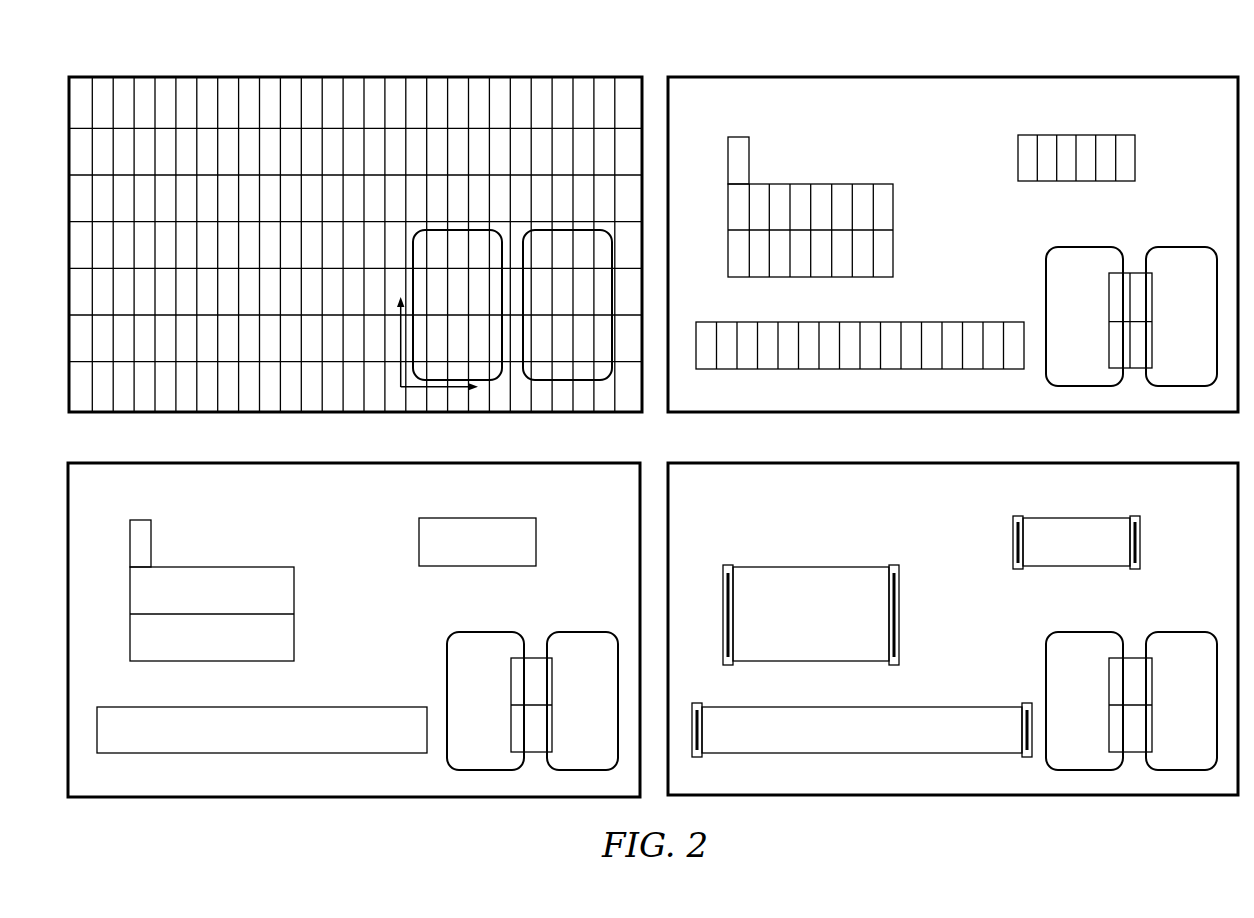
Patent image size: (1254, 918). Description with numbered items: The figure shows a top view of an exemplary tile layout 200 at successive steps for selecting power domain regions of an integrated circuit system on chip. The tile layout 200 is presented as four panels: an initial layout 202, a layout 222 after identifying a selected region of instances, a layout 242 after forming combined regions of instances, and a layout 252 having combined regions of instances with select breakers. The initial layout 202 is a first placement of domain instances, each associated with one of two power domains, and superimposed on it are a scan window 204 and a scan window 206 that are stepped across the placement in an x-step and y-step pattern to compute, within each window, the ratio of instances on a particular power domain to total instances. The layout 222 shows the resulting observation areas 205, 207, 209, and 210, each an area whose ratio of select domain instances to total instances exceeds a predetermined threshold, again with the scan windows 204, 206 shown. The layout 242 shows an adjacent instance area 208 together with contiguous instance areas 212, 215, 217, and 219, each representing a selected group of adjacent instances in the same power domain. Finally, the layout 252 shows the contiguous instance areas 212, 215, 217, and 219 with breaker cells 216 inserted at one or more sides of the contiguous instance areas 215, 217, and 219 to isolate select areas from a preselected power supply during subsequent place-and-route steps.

The tile layout 200 is at (110, 52).
The initial layout 202 is at (358, 77).
The scan window 204 is at (443, 230).
The scan window 206 is at (550, 230).
The layout after identifying a selected region of instances 222 is at (950, 77).
The observation area 205 is at (830, 184).
The observation area 207 is at (1086, 135).
The observation area 209 is at (900, 322).
The observation area 210 is at (1130, 273).
The layout after forming combined regions of instances 242 is at (355, 463).
The adjacent instance area 208 is at (152, 548).
The contiguous instance area 215 is at (232, 566).
The contiguous instance area 217 is at (475, 518).
The contiguous instance area 212 is at (530, 658).
The contiguous instance area 219 is at (320, 707).
The layout having combined regions of instances with select breakers 252 is at (905, 463).
The breaker cells 216 is at (726, 565).